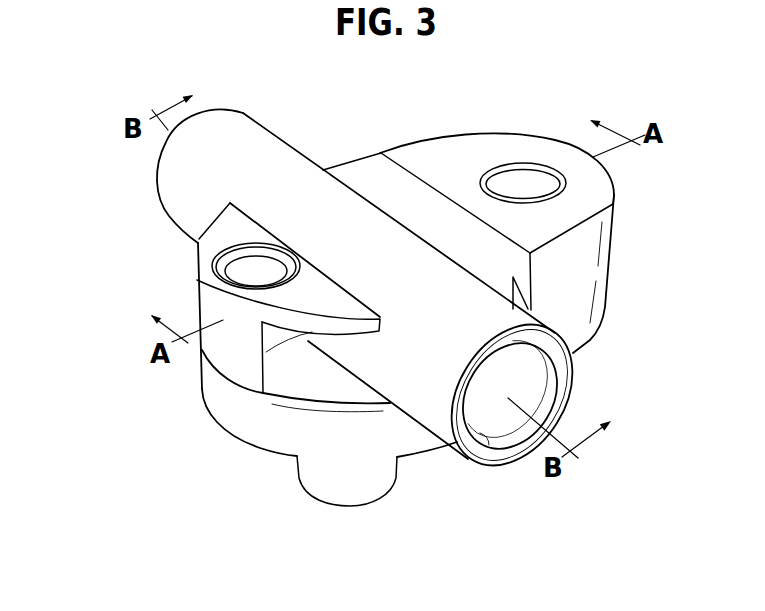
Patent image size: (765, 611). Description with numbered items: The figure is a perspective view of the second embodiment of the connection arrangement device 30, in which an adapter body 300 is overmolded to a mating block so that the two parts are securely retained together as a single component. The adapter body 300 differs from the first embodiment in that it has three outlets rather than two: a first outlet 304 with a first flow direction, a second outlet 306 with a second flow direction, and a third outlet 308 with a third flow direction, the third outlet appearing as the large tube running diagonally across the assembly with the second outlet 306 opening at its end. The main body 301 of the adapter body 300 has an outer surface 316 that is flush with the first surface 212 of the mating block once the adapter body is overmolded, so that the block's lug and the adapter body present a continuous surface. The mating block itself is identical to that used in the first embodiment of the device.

The connection arrangement device 30 is at (578, 84).
The first surface 212 is at (461, 152).
The adapter body 300 is at (197, 280).
The main body 301 is at (247, 370).
The first outlet 304 is at (343, 500).
The second outlet 306 is at (489, 445).
The third outlet 308 is at (182, 183).
The outer surface 316 is at (372, 170).